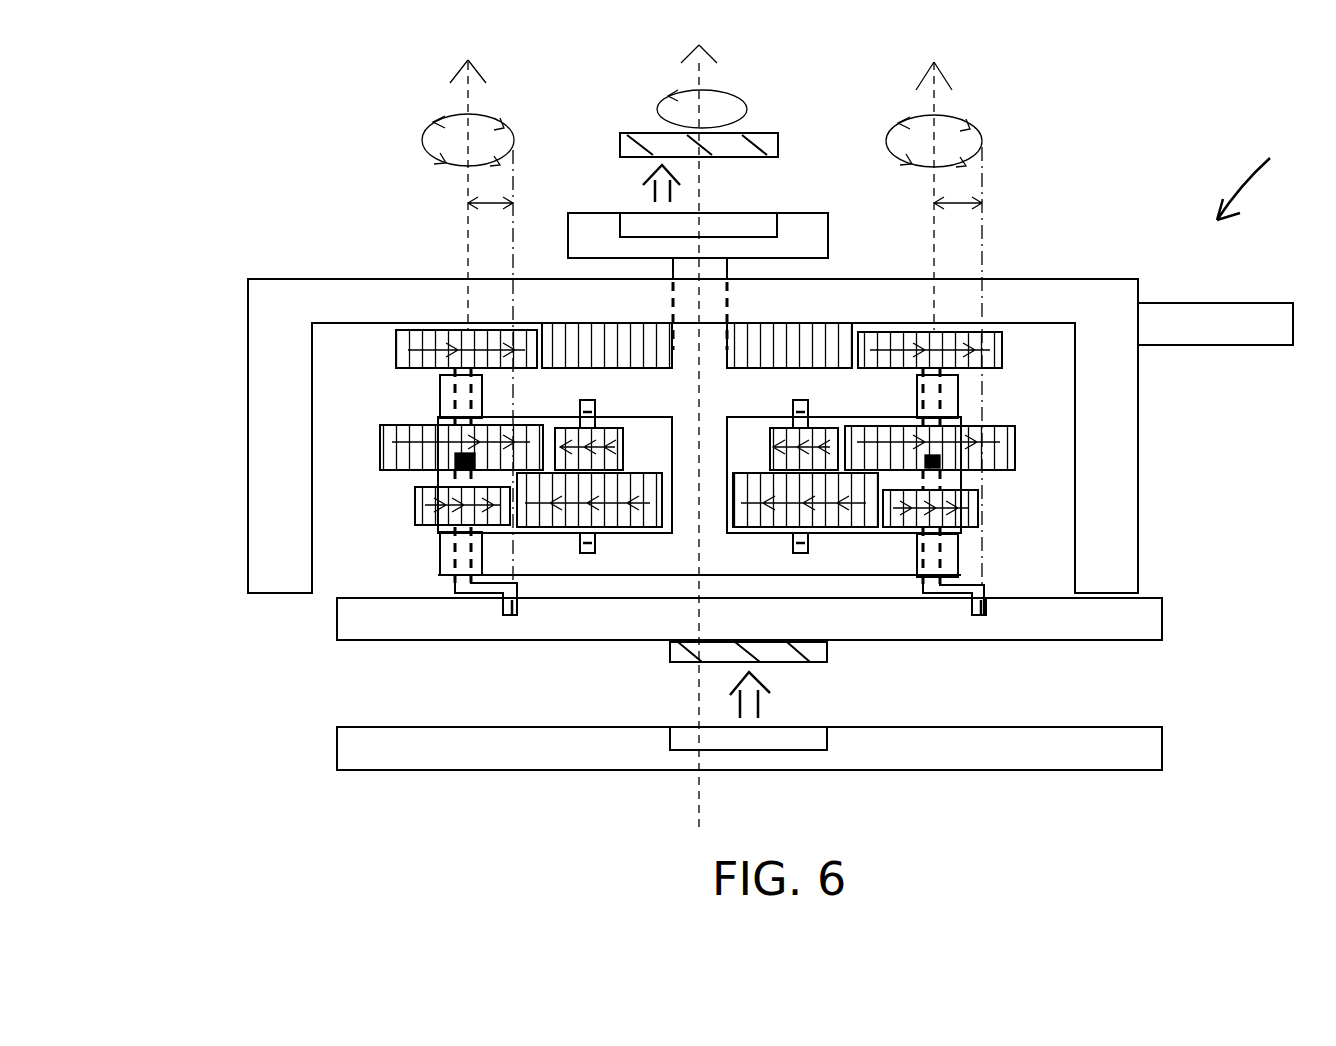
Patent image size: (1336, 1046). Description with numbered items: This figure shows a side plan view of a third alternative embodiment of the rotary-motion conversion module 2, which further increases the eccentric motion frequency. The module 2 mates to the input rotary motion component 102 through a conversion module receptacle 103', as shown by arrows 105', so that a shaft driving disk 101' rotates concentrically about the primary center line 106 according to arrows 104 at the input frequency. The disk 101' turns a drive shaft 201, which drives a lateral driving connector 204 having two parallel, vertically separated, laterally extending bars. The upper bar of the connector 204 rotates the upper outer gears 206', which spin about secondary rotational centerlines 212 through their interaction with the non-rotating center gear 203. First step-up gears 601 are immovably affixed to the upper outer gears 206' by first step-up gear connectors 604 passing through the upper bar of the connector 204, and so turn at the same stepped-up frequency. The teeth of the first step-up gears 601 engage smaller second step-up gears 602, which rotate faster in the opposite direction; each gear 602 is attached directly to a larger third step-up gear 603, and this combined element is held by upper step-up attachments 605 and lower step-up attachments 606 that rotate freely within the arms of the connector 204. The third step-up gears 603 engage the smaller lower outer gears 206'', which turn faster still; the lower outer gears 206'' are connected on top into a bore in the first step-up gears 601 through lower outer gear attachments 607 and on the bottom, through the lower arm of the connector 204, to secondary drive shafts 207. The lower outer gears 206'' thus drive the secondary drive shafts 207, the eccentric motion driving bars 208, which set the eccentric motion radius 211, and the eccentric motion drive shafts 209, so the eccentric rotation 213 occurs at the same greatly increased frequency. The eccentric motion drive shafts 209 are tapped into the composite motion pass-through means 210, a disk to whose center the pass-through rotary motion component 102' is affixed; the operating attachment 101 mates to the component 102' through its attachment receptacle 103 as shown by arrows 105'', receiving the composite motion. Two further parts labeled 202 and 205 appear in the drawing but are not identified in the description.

The rotary-motion conversion module 2 is at (1262, 172).
The primary center line 106 is at (700, 73).
The arrows of primary input rotation 104 is at (723, 108).
The input rotary motion component 102 is at (733, 135).
The arrows of mating 105' is at (610, 165).
The shaft driving disk 101' is at (677, 213).
The conversion module receptacle 103' is at (737, 206).
The arrows of eccentric rotation 213 is at (487, 140).
The secondary rotational centerlines 212 is at (468, 242).
The eccentric motion radius 211 is at (470, 205).
The housing 202 is at (392, 315).
The housing flange 205 is at (1240, 336).
The drive shaft 201 is at (780, 352).
The non-rotating center gear 203 is at (712, 455).
The upper outer gears 206' is at (726, 330).
The lateral driving connector 204 is at (870, 409).
The second step-up gears 602 is at (553, 420).
The first step-up gear connectors 604 is at (455, 387).
The first step-up gears 601 is at (420, 452).
The lower outer gear attachments 607 is at (458, 485).
The third step-up gears 603 is at (517, 477).
The lower outer gears 206'' is at (708, 533).
The secondary drive shafts 207 is at (455, 560).
The upper step-up attachments 605 is at (792, 408).
The lower step-up attachments 606 is at (792, 542).
The eccentric motion driving bars 208 is at (488, 587).
The eccentric motion drive shafts 209 is at (520, 612).
The composite motion pass-through means 210 is at (805, 632).
The pass-through rotary motion component 102' is at (713, 656).
The arrows of mating 105'' is at (701, 695).
The attachment receptacle 103 is at (771, 715).
The operating attachment 101 is at (749, 748).